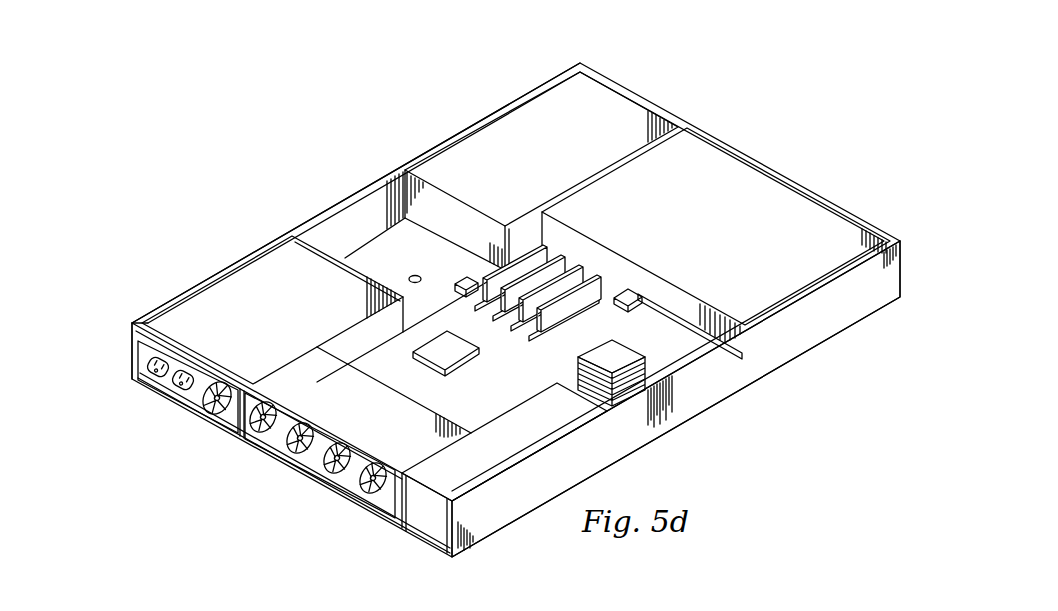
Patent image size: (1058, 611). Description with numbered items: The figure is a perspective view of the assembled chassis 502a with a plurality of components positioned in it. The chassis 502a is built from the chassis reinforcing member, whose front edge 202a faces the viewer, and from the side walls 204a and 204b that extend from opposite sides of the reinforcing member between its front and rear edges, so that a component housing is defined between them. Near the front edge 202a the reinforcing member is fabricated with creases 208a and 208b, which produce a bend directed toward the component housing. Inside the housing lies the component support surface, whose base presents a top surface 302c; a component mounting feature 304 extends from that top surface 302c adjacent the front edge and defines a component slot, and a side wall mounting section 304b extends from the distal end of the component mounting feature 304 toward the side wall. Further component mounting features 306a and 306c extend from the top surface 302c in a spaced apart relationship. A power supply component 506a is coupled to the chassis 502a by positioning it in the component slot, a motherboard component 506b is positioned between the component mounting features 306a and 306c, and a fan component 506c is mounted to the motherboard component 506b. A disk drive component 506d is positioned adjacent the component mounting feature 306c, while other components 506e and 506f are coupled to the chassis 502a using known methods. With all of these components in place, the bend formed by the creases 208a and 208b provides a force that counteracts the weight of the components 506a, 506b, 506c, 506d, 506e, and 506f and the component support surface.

The chassis 502a is at (359, 131).
The front edge 202a is at (292, 465).
The side wall 204a is at (334, 207).
The side wall 204b is at (783, 355).
The crease 208a is at (232, 437).
The crease 208b is at (348, 502).
The top surface 302c is at (432, 266).
The component mounting feature 304 is at (272, 293).
The side wall mounting section 304b is at (130, 330).
The component mounting feature 306a is at (463, 284).
The component mounting feature 306c is at (632, 292).
The power supply component 506a is at (170, 385).
The motherboard component 506b is at (668, 337).
The fan component 506c is at (296, 368).
The disk drive component 506d is at (770, 183).
The other component 506e is at (617, 97).
The other component 506f is at (510, 412).